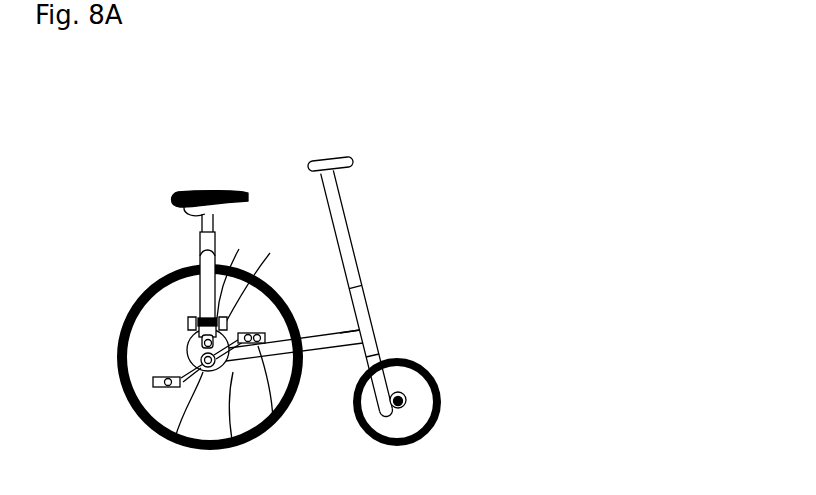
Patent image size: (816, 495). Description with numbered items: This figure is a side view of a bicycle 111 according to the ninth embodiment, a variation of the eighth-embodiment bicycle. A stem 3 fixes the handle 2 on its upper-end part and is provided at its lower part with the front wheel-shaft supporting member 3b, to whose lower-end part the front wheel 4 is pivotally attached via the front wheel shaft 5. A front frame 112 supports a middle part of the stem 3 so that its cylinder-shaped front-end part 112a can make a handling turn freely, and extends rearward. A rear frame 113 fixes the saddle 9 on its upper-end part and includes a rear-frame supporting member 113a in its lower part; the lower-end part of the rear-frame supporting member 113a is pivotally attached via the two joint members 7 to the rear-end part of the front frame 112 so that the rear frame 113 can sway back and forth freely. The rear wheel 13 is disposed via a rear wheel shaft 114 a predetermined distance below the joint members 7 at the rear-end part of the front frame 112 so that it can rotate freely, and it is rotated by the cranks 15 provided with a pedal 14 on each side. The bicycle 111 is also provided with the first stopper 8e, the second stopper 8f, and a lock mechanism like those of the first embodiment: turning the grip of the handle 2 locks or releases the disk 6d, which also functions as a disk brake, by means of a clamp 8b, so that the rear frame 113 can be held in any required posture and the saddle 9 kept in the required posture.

The bicycle 111 is at (283, 152).
The handle 2 is at (352, 163).
The stem 3 is at (339, 205).
The front wheel-shaft supporting member 3b is at (378, 378).
The front wheel 4 is at (438, 419).
The front wheel shaft 5 is at (407, 402).
The disk 6d is at (202, 341).
The joint member 7 is at (187, 346).
The clamp 8b is at (239, 273).
The first stopper 8e is at (260, 277).
The second stopper 8f is at (189, 318).
The saddle 9 is at (198, 191).
The rear wheel 13 is at (131, 411).
The pedal 14 is at (154, 383).
The crank 15 is at (198, 368).
The front frame 112 is at (320, 337).
The front-end part 112a is at (366, 318).
The rear frame 113 is at (199, 243).
The rear-frame supporting member 113a is at (199, 279).
The rear wheel shaft 114 is at (174, 444).